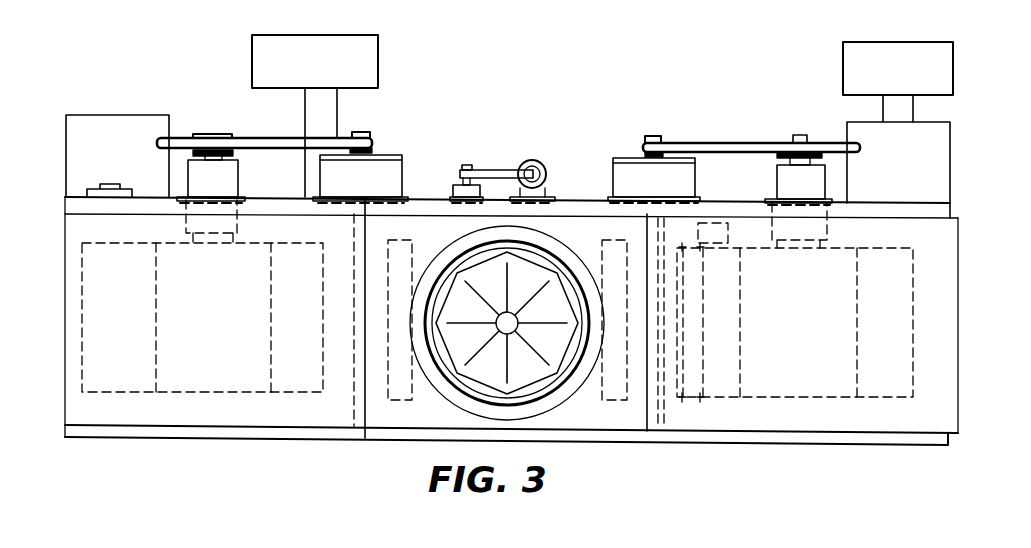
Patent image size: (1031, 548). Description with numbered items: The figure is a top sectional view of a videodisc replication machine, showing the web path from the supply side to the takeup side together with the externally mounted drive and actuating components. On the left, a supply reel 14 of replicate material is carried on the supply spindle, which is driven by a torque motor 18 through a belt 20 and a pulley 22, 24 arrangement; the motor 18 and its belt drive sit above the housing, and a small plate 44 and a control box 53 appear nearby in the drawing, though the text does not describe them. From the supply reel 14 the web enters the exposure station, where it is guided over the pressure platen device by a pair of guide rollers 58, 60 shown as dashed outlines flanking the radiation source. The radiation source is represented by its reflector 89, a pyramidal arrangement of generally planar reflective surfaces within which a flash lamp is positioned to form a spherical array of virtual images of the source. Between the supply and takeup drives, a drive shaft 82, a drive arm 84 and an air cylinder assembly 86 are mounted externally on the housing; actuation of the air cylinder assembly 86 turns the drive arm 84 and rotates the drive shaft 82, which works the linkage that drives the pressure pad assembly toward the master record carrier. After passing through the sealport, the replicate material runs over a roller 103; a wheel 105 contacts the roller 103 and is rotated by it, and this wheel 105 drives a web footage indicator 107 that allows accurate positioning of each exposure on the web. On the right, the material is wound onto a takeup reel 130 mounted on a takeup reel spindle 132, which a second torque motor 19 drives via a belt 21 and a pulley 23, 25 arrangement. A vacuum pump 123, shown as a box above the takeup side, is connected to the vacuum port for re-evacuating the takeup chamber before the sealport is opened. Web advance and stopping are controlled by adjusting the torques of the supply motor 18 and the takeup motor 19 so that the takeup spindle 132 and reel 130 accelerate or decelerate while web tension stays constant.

The supply reel 14 is at (313, 387).
The torque motor 18 is at (400, 175).
The torque motor 19 is at (612, 173).
The belt 20 is at (290, 138).
The belt 21 is at (716, 142).
The pulley 22 is at (368, 135).
The pulley 23 is at (767, 149).
The pulley 24 is at (207, 133).
The pulley 25 is at (652, 134).
The switch plate 44 is at (125, 185).
The control box 53 is at (378, 60).
The guide roller 58 is at (414, 393).
The guide roller 60 is at (614, 396).
The drive shaft 82 is at (468, 164).
The drive arm 84 is at (500, 169).
The air cylinder assembly 86 is at (545, 162).
The reflector 89 is at (477, 275).
The roller 103 is at (697, 400).
The wheel 105 is at (695, 255).
The web footage indicator 107 is at (737, 234).
The vacuum pump 123 is at (948, 82).
The takeup reel 130 is at (882, 392).
The takeup reel spindle 132 is at (798, 134).